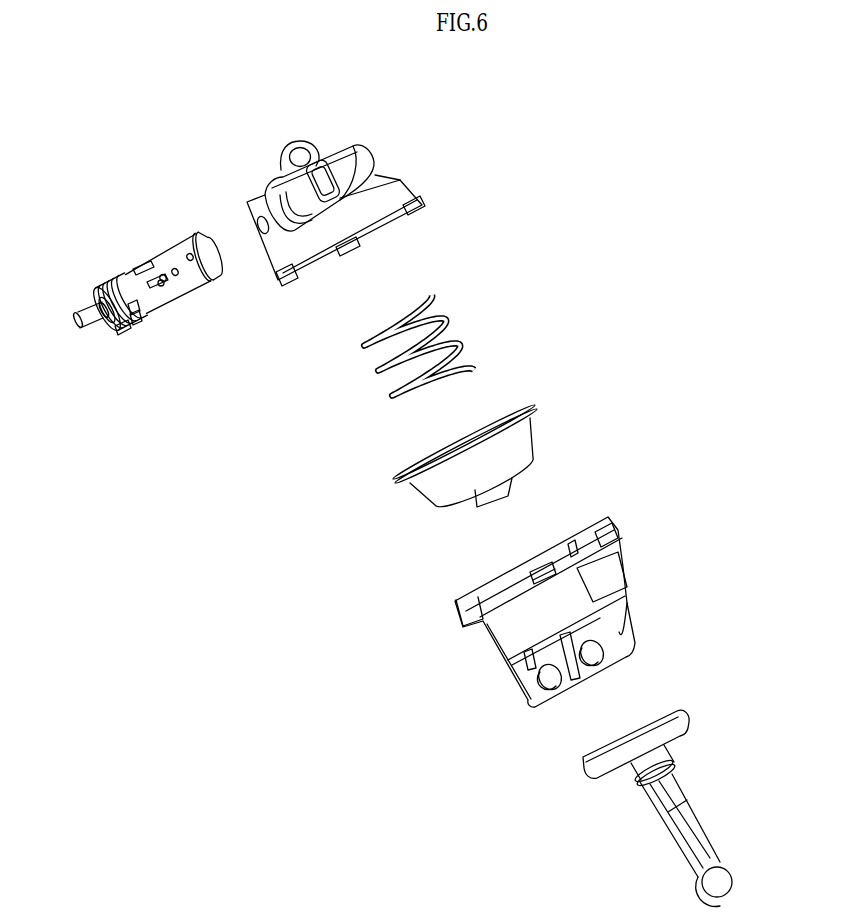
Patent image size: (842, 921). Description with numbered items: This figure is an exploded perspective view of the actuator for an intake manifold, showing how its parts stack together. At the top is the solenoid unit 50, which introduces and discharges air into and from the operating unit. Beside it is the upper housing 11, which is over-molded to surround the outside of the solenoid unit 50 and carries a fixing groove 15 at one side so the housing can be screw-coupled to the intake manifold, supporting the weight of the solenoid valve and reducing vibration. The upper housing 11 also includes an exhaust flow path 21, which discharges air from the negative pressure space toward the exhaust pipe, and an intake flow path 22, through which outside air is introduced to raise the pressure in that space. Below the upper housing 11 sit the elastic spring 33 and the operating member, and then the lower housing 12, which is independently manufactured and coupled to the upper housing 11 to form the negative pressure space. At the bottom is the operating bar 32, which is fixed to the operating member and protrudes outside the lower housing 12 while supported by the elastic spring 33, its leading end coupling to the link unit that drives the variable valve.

The solenoid unit 50 is at (117, 254).
The exhaust flow path 21 is at (87, 315).
The intake flow path 22 is at (123, 337).
The upper housing 11 is at (398, 197).
The fixing groove 15 is at (306, 143).
The elastic spring 33 is at (457, 348).
The lower housing 12 is at (510, 630).
The operating bar 32 is at (687, 812).